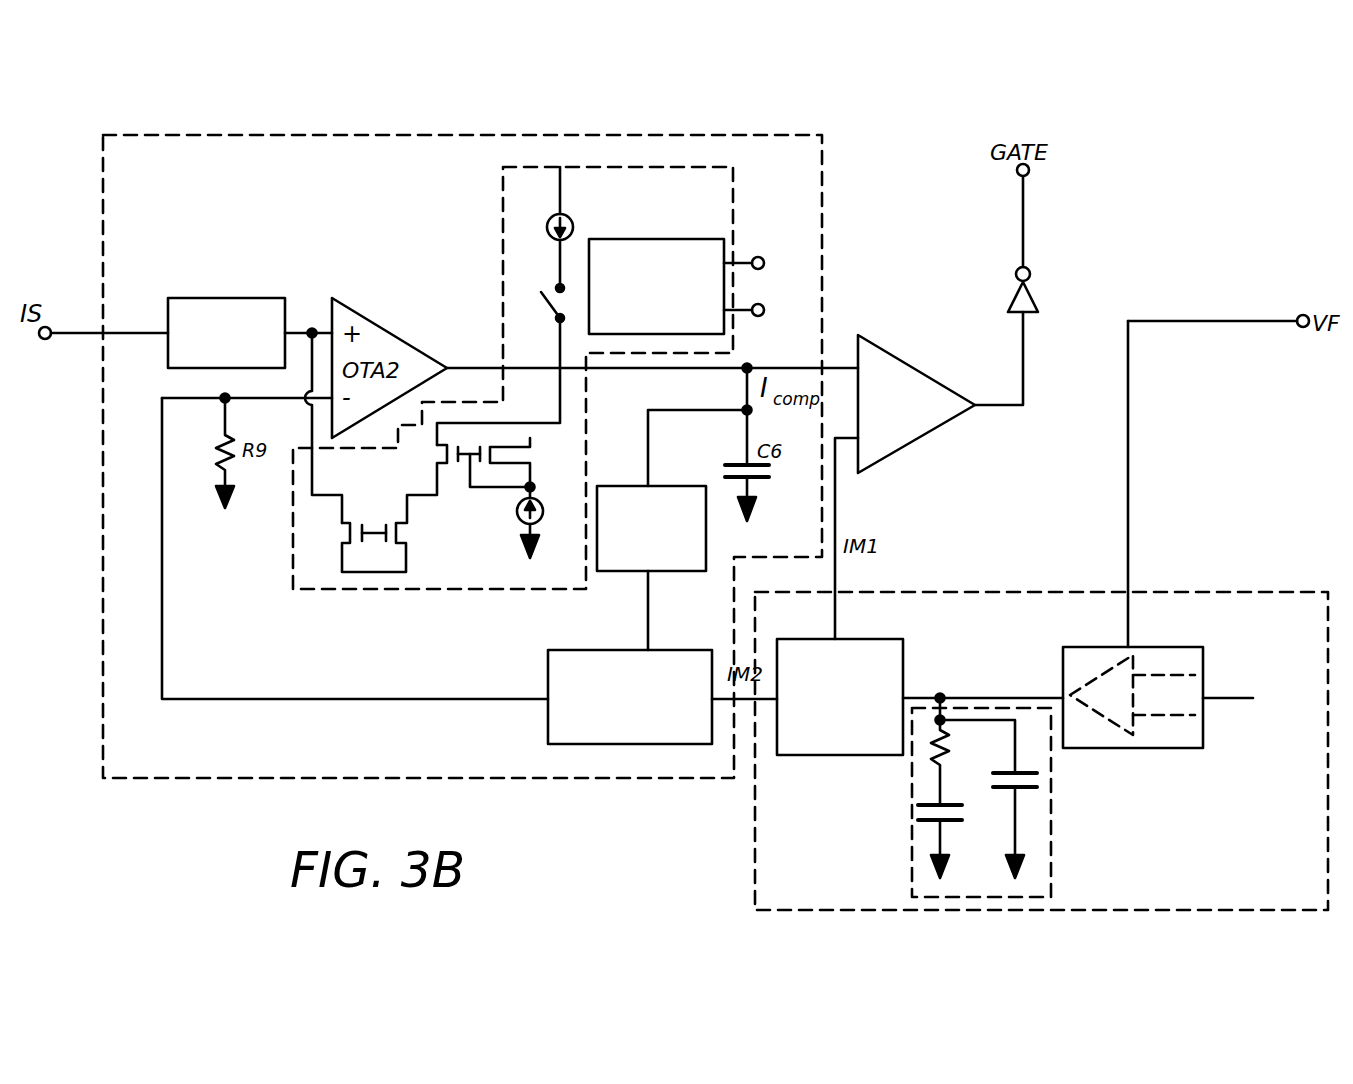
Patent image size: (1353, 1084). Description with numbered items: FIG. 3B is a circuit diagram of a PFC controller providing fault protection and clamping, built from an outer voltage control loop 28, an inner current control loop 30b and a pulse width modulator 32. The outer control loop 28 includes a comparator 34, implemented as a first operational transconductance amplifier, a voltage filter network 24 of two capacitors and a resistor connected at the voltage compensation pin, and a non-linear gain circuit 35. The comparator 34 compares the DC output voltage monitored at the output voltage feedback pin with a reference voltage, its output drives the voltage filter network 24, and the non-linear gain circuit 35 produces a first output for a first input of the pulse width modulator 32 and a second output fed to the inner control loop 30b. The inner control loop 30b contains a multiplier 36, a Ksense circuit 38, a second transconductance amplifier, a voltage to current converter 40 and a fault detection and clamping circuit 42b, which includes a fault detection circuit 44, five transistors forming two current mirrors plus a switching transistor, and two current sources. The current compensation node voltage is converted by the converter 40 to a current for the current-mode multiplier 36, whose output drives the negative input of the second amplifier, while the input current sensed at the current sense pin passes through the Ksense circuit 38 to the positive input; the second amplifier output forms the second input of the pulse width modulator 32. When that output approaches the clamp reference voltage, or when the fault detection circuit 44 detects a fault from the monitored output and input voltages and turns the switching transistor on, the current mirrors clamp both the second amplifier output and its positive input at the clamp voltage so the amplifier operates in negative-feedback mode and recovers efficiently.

The inner (current) control loop 30b is at (275, 133).
The Ksense circuit 38 is at (237, 298).
The fault detection and clamping circuit 42b is at (500, 272).
The fault detection circuit 44 is at (647, 239).
The pulse width modulator 32 is at (893, 352).
The voltage to current (V-to-I) converter 40 is at (668, 486).
The multiplier 36 is at (598, 650).
The non-linear gain circuit 35 is at (868, 639).
The comparator 34 is at (1165, 647).
The outer (voltage) control loop 28 is at (1213, 592).
The voltage filter network 24 is at (1051, 851).